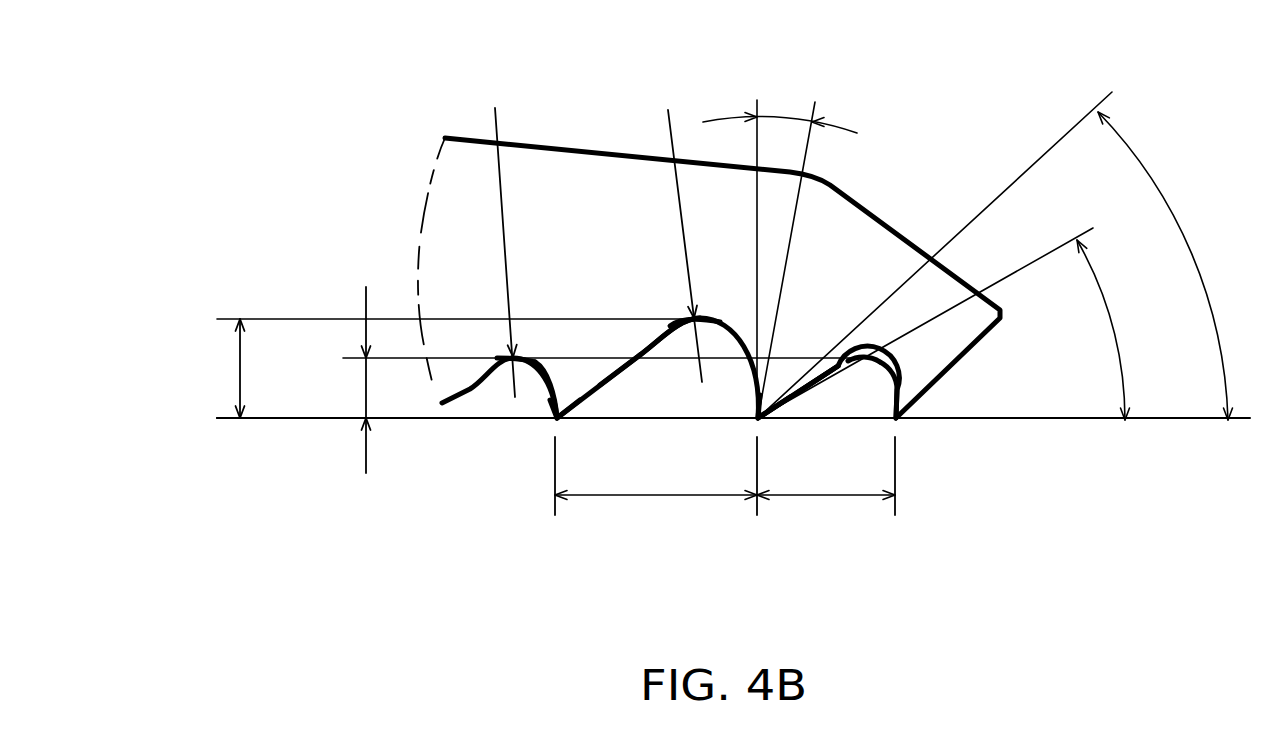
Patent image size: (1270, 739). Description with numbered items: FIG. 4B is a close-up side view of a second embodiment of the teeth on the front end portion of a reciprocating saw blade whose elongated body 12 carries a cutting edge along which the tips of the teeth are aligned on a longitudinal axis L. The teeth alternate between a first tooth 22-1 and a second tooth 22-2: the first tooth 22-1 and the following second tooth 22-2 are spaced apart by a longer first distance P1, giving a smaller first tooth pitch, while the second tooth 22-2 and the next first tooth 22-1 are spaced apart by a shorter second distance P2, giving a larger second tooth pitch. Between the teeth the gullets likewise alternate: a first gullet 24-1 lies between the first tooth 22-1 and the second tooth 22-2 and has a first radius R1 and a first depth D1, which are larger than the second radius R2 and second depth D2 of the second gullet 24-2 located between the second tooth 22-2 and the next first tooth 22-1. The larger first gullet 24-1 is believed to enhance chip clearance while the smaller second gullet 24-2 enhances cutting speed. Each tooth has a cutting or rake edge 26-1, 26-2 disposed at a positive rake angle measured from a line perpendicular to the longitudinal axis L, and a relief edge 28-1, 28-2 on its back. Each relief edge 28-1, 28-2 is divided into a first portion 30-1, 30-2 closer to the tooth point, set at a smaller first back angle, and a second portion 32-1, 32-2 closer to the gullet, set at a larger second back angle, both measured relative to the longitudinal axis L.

The elongated body 12 is at (602, 172).
The first tooth 22-1 is at (455, 380).
The second tooth 22-2 is at (568, 393).
The first gullet 24-1 is at (680, 400).
The second gullet 24-2 is at (862, 400).
The rake edge 26-1 is at (753, 397).
The rake edge 26-2 is at (530, 403).
The relief edge 28-1 is at (813, 395).
The relief edge 28-2 is at (655, 383).
The first portion 30-1 is at (778, 395).
The first portion 30-2 is at (593, 400).
The second portion 32-1 is at (843, 365).
The second portion 32-2 is at (628, 362).
The first radius R1 is at (675, 222).
The second radius R2 is at (506, 228).
The first depth D1 is at (240, 371).
The second depth D2 is at (374, 403).
The longitudinal axis L is at (343, 421).
The first distance P1 is at (656, 485).
The second distance P2 is at (826, 486).